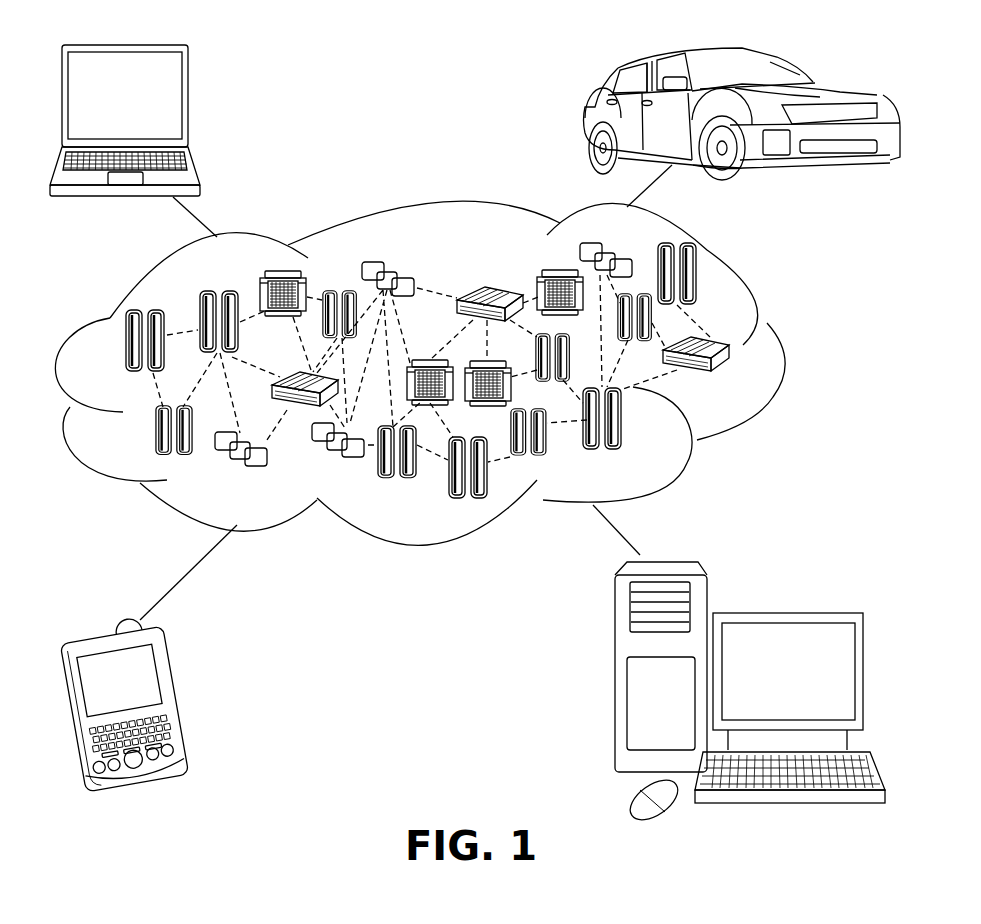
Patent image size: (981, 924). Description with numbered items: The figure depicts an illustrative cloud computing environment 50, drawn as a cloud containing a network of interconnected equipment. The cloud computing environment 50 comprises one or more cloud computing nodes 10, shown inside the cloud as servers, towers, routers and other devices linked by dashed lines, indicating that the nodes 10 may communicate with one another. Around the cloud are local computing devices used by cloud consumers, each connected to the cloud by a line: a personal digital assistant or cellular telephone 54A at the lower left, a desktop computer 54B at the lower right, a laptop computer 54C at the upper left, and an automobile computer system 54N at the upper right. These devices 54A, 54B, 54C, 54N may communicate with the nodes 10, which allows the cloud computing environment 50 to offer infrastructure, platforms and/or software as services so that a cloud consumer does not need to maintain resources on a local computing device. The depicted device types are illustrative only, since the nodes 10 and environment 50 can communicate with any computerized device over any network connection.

The cloud computing node 10 is at (745, 384).
The cloud computing environment 50 is at (787, 350).
The personal digital assistant or cellular telephone 54A is at (180, 700).
The desktop computer 54B is at (785, 613).
The laptop computer 54C is at (190, 102).
The automobile computer system 54N is at (588, 118).